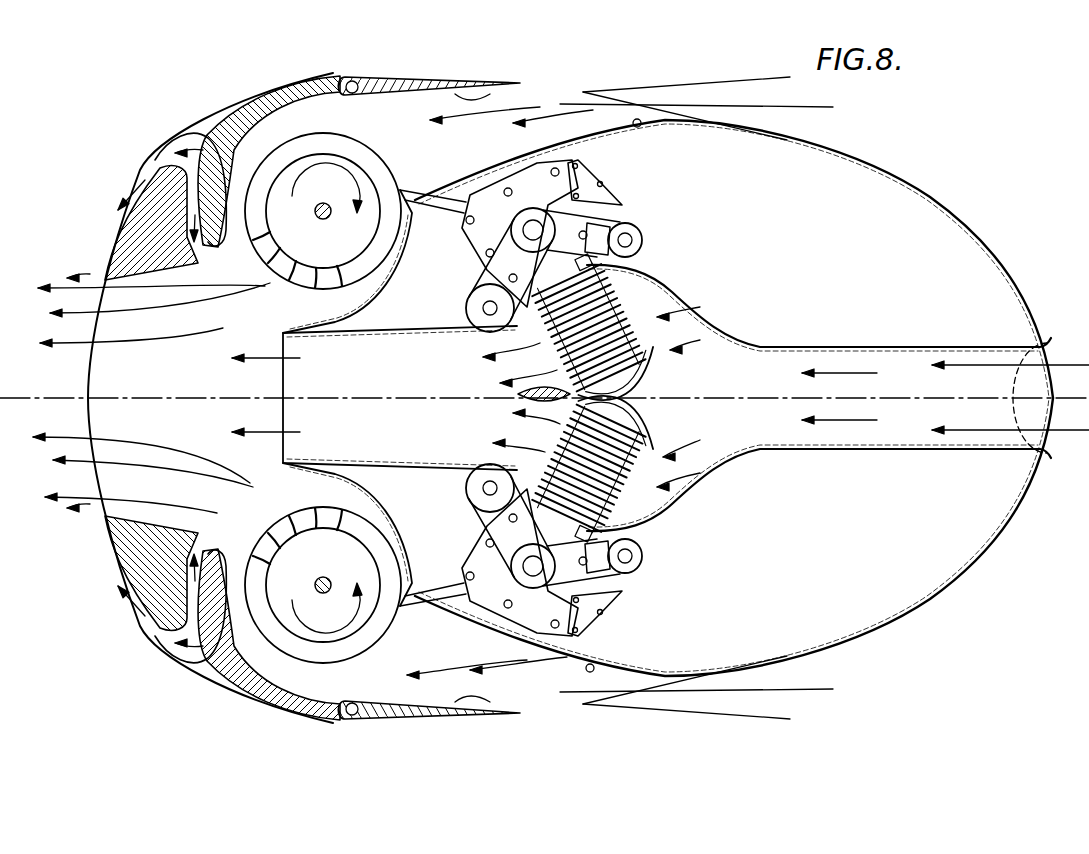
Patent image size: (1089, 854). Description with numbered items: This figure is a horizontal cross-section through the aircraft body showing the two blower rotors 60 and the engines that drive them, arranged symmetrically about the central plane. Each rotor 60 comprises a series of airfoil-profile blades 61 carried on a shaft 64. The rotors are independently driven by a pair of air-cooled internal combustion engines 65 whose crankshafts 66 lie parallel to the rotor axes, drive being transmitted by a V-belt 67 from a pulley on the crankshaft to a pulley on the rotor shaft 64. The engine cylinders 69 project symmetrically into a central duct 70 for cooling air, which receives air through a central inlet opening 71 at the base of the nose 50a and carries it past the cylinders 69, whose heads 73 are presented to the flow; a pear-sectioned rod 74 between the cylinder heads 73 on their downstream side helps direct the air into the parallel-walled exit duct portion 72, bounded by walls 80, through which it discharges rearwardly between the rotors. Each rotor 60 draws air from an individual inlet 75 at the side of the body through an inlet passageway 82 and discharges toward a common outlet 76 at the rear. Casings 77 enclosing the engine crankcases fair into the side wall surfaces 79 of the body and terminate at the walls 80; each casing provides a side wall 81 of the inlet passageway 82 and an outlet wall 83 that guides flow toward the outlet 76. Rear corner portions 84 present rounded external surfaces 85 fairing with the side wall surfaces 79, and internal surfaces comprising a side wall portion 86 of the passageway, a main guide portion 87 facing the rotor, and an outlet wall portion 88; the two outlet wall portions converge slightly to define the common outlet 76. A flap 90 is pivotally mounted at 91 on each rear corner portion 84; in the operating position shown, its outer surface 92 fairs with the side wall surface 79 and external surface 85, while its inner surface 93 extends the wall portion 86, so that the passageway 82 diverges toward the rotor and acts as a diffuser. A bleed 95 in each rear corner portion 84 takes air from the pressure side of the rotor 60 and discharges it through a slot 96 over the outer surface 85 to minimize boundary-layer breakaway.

The nose 50a is at (1047, 470).
The blower rotor 60 is at (312, 93).
The blades 61 is at (315, 287).
The shaft 64 is at (324, 203).
The internal combustion engine 65 is at (626, 214).
The crankshaft 66 is at (604, 188).
The V-belt 67 is at (432, 206).
The cylinders 69 is at (660, 283).
The central duct 70 is at (913, 390).
The central inlet opening 71 is at (1038, 418).
The exit duct portion 72 is at (400, 392).
The cylinder heads 73 is at (600, 337).
The pear-sectioned rod 74 is at (520, 395).
The inlets 75 is at (617, 94).
The common outlet 76 is at (88, 384).
The casings 77 is at (412, 246).
The side wall surfaces 79 is at (775, 130).
The walls 80 is at (368, 340).
The side wall 81 is at (640, 126).
The inlet passageway 82 is at (432, 162).
The outlet wall 83 is at (392, 270).
The rear corner portions 84 is at (143, 220).
The external surfaces 85 is at (173, 143).
The side wall portion 86 is at (262, 100).
The main guide portion 87 is at (232, 222).
The outlet wall portion 88 is at (160, 278).
The flap 90 is at (418, 80).
The pivot 91 is at (355, 82).
The outer surface 92 is at (467, 92).
The inner surface 93 is at (510, 84).
The bleed 95 is at (204, 148).
The slot 96 is at (153, 173).